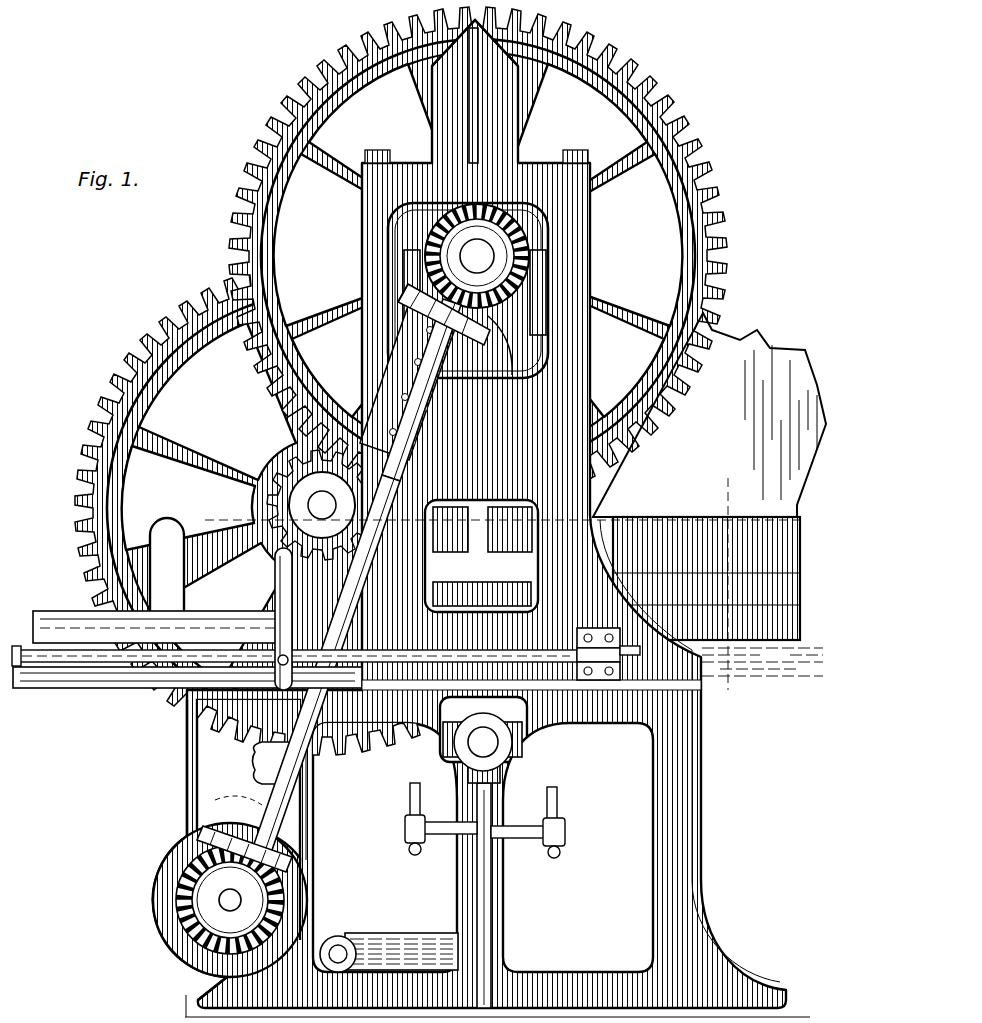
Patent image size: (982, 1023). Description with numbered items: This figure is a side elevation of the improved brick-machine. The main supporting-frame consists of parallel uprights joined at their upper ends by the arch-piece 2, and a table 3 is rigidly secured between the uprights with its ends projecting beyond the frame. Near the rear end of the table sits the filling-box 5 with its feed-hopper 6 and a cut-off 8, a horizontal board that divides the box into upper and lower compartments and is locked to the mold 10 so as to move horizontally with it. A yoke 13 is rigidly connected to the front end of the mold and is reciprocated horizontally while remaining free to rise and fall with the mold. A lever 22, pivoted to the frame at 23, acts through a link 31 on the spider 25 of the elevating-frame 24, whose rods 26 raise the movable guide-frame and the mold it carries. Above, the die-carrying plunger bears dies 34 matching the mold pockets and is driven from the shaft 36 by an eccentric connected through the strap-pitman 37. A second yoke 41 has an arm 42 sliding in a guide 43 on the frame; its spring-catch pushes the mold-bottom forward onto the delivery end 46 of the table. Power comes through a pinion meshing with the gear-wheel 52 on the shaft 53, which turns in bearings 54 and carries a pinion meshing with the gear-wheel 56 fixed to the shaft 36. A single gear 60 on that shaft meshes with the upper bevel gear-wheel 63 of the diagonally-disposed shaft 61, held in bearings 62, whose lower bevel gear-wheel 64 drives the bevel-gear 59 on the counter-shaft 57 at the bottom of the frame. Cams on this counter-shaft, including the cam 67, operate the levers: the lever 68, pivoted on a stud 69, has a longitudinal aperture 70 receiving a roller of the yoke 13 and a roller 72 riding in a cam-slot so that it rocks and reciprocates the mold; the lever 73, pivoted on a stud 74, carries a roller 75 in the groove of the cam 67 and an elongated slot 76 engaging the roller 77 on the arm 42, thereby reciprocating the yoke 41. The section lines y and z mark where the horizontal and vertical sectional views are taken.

The arch-piece 2 is at (495, 116).
The table 3 is at (73, 672).
The filling-box 5 is at (787, 553).
The feed-hopper 6 is at (709, 415).
The cut-off 8 is at (800, 576).
The mold 10 is at (489, 593).
The yoke 13 is at (68, 620).
The lever 22 is at (403, 940).
The pivot 23 is at (345, 953).
The elevating-frame 24 is at (470, 828).
The spider 25 is at (432, 848).
The rods 26 is at (412, 800).
The link 31 is at (492, 883).
The dies 34 is at (482, 556).
The shaft 36 is at (490, 250).
The strap-pitman 37 is at (512, 340).
The yoke 41 is at (152, 656).
The arm 42 is at (541, 650).
The guide 43 is at (607, 680).
The delivery end 46 is at (28, 657).
The gear-wheel 52 is at (100, 416).
The shaft 53 is at (306, 502).
The bearings 54 is at (307, 508).
The gear-wheel 56 is at (266, 217).
The counter-shaft 57 is at (226, 902).
The bevel-gear 59 is at (230, 925).
The single gear 60 is at (502, 272).
The diagonally-disposed shaft 61 is at (370, 443).
The bearings 62 is at (427, 357).
The bevel gear-wheel 63 is at (412, 285).
The bevel gear-wheel 64 is at (226, 800).
The cam 67 is at (158, 897).
The lever 68 is at (186, 803).
The stud 69 is at (160, 862).
The longitudinal aperture 70 is at (177, 528).
The roller 72 is at (200, 905).
The lever 73 is at (282, 712).
The stud 74 is at (292, 850).
The roller 75 is at (305, 900).
The elongated slot 76 is at (278, 614).
The roller 77 is at (272, 644).
The section line y y is at (502, 521).
The section line z z is at (728, 585).